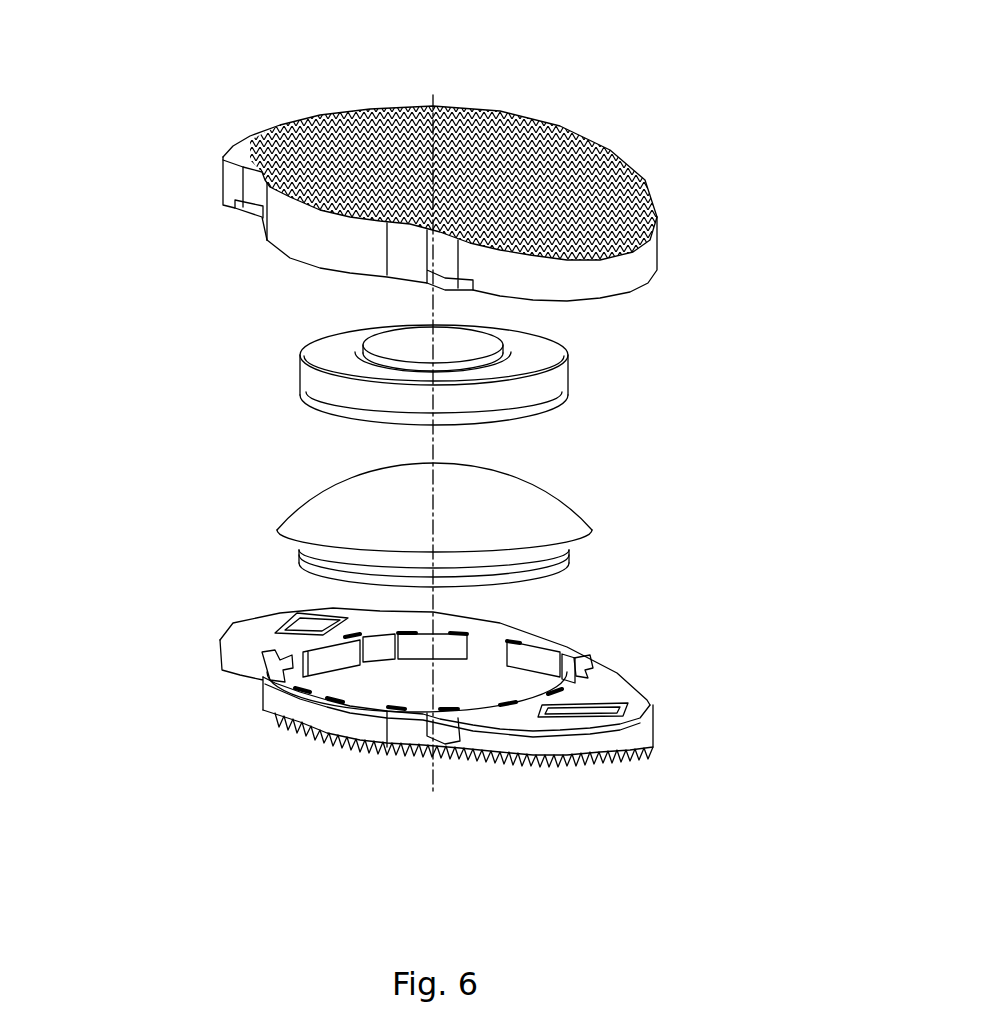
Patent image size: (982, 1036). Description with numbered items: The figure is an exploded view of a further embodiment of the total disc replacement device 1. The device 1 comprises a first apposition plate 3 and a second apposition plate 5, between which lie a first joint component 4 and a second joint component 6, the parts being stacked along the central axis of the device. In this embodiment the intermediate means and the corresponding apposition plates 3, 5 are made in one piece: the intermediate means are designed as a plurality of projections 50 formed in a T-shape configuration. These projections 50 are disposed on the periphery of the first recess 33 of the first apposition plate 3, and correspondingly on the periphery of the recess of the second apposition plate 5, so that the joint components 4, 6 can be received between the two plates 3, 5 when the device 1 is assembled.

The total disc replacement device 1 is at (615, 105).
The first apposition plate 3 is at (610, 685).
The first joint component 4 is at (515, 518).
The second apposition plate 5 is at (613, 272).
The second joint component 6 is at (535, 395).
The first recess 33 is at (358, 678).
The projections 50 is at (537, 653).